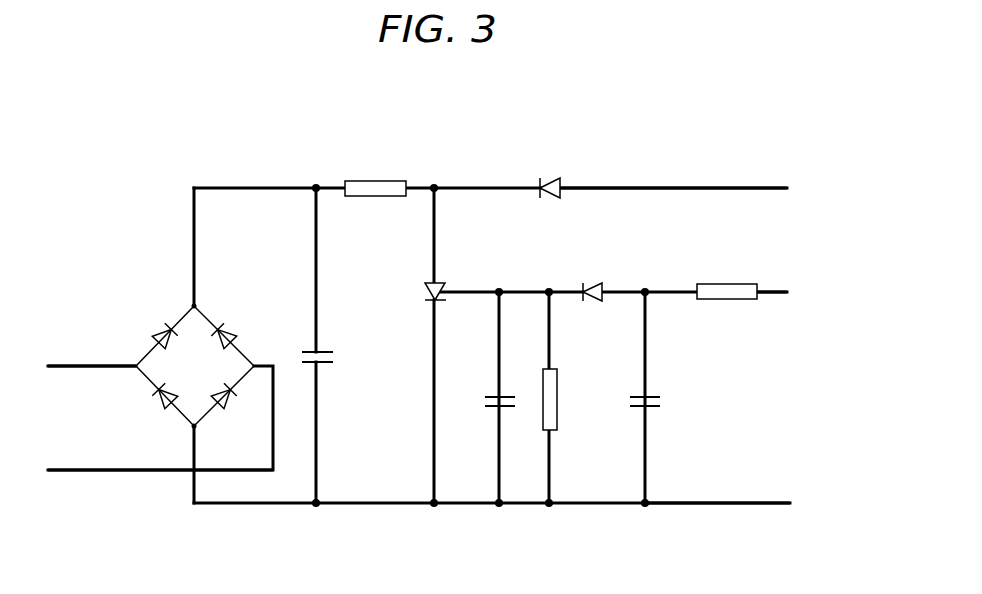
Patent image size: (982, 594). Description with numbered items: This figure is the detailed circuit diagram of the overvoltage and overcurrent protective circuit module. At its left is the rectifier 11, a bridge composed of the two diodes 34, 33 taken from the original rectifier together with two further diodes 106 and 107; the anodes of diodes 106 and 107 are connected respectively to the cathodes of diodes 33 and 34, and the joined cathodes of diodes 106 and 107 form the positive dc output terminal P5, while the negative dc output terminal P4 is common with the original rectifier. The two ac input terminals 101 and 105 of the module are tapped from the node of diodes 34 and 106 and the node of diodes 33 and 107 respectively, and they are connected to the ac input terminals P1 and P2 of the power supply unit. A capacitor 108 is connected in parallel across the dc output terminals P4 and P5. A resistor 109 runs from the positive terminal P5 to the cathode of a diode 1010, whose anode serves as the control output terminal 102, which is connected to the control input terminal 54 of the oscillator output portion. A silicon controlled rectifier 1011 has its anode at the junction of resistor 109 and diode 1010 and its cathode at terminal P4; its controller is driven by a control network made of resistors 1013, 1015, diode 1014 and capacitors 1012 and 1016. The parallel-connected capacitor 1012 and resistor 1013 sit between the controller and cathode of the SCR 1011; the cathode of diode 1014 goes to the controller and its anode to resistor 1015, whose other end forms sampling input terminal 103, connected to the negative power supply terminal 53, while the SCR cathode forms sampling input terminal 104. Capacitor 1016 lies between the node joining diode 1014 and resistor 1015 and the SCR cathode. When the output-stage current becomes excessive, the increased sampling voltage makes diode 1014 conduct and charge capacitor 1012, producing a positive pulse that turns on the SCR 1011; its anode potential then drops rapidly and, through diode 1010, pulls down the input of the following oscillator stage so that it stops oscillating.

The rectifier 11 is at (208, 378).
The diode 33 is at (234, 397).
The diode 34 is at (154, 400).
The diode 106 is at (166, 324).
The diode 107 is at (237, 318).
The ac input terminal P1 is at (136, 362).
The ac input terminal P2 is at (253, 362).
The negative dc output terminal P4 is at (200, 425).
The positive dc output terminal P5 is at (197, 306).
The ac input terminal 101 is at (70, 364).
The ac input terminal 105 is at (73, 468).
The control output terminal 102 is at (710, 185).
The sampling input terminal 103 is at (808, 292).
The sampling input terminal 104 is at (735, 502).
The negative power supply terminal 53 is at (844, 292).
The control input terminal 54 is at (844, 185).
The capacitor 108 is at (323, 364).
The resistor 109 is at (388, 180).
The diode 1010 is at (543, 180).
The silicon controlled rectifier 1011 is at (423, 288).
The capacitor 1012 is at (495, 395).
The resistor 1013 is at (559, 397).
The diode 1014 is at (587, 283).
The resistor 1015 is at (728, 283).
The capacitor 1016 is at (653, 393).